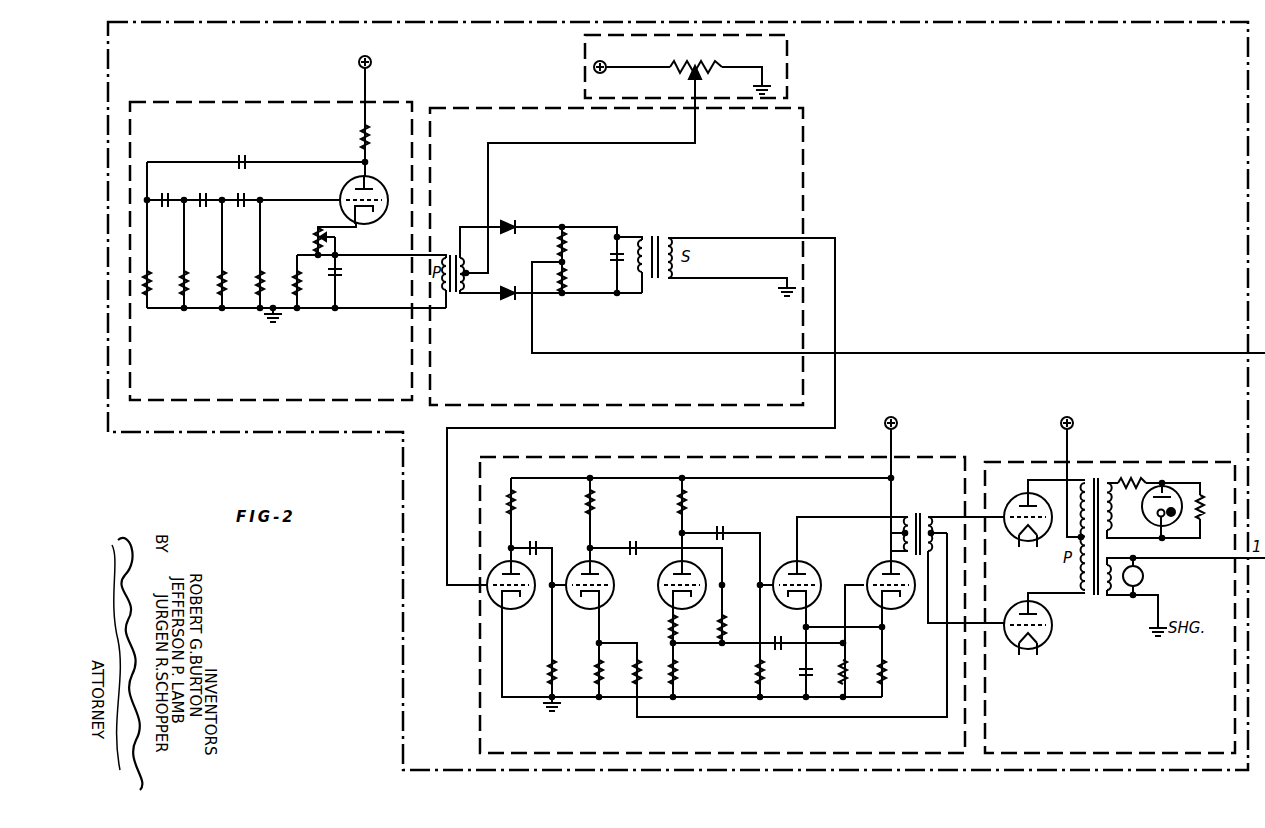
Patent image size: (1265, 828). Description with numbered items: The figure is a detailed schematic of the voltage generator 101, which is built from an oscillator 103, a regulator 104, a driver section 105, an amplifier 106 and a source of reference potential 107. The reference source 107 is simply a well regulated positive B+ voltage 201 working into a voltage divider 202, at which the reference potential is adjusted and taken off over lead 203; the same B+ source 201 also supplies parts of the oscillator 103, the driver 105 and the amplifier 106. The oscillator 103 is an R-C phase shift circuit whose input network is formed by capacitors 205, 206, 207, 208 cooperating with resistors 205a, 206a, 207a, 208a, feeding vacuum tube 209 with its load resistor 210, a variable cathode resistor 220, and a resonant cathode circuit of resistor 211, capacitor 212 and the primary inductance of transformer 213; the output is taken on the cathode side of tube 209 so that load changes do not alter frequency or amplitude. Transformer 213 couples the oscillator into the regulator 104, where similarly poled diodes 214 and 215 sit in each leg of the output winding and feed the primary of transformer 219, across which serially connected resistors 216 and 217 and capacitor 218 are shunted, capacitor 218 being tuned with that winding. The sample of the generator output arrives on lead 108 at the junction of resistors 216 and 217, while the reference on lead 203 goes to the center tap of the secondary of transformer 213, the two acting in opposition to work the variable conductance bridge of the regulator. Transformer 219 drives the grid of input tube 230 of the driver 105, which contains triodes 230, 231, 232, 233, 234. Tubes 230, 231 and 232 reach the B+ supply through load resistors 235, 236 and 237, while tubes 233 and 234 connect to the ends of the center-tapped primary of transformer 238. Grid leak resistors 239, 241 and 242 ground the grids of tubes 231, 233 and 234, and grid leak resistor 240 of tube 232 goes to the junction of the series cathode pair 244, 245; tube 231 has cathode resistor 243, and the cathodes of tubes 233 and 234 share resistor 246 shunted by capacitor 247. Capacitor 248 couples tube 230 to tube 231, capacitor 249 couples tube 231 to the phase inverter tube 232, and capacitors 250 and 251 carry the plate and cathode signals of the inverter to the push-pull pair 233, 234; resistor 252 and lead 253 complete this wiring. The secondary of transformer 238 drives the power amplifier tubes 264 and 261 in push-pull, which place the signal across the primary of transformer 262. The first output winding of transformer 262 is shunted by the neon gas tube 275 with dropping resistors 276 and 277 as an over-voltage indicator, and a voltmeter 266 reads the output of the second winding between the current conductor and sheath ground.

The generator 101 is at (205, 437).
The oscillator 103 is at (221, 101).
The regulator 104 is at (532, 104).
The driver section 105 is at (956, 454).
The amplifier 106 is at (1156, 458).
The source of reference potential 107 is at (580, 54).
The lead 108 is at (1101, 352).
The source of positive D.-C. or B+ voltage 201 is at (371, 60).
The voltage divider 202 is at (697, 50).
The lead 203 is at (593, 152).
The capacitor 205 is at (247, 155).
The capacitor 206 is at (166, 187).
The capacitor 207 is at (206, 187).
The capacitor 208 is at (246, 187).
The resistor 205a is at (150, 298).
The resistor 206a is at (188, 298).
The resistor 207a is at (226, 298).
The resistor 208a is at (264, 274).
The vacuum tube 209 is at (342, 188).
The load resistor 210 is at (355, 135).
The resistor 211 is at (300, 298).
The capacitor 212 is at (348, 272).
The transformer 213 is at (455, 248).
The diode 214 is at (506, 222).
The diode 215 is at (520, 276).
The resistor 216 is at (547, 244).
The resistor 217 is at (568, 276).
The capacitor 218 is at (608, 256).
The transformer 219 is at (653, 240).
The variable cathode resistor 220 is at (316, 232).
The input tube 230 is at (502, 596).
The vacuum tube 231 is at (608, 590).
The phase inverter tube 232 is at (672, 574).
The vacuum tube 233 is at (806, 570).
The vacuum tube 234 is at (874, 574).
The load resistor 235 is at (516, 500).
The load resistor 236 is at (595, 498).
The load resistor 237 is at (687, 498).
The transformer 238 is at (921, 512).
The grid leak resistor 239 is at (544, 668).
The grid leak resistor 240 is at (727, 622).
The grid leak resistor 241 is at (754, 678).
The grid leak resistor 242 is at (838, 668).
The cathode resistor 243 is at (595, 668).
The cathode resistor 244 is at (668, 626).
The cathode resistor 245 is at (679, 670).
The resistor 246 is at (886, 678).
The capacitor 247 is at (796, 674).
The capacitor 248 is at (546, 538).
The capacitor 249 is at (640, 538).
The capacitor 250 is at (722, 529).
The capacitor 251 is at (790, 624).
The resistor 252 is at (634, 664).
The feedback lead 253 is at (922, 708).
The tube 261 is at (1022, 582).
The transformer 262 is at (1090, 596).
The electron tube 264 is at (1016, 488).
The voltmeter 266 is at (1143, 576).
The gas tube 275 is at (1166, 492).
The dropping resistor 276 is at (1132, 490).
The dropping resistor 277 is at (1204, 520).